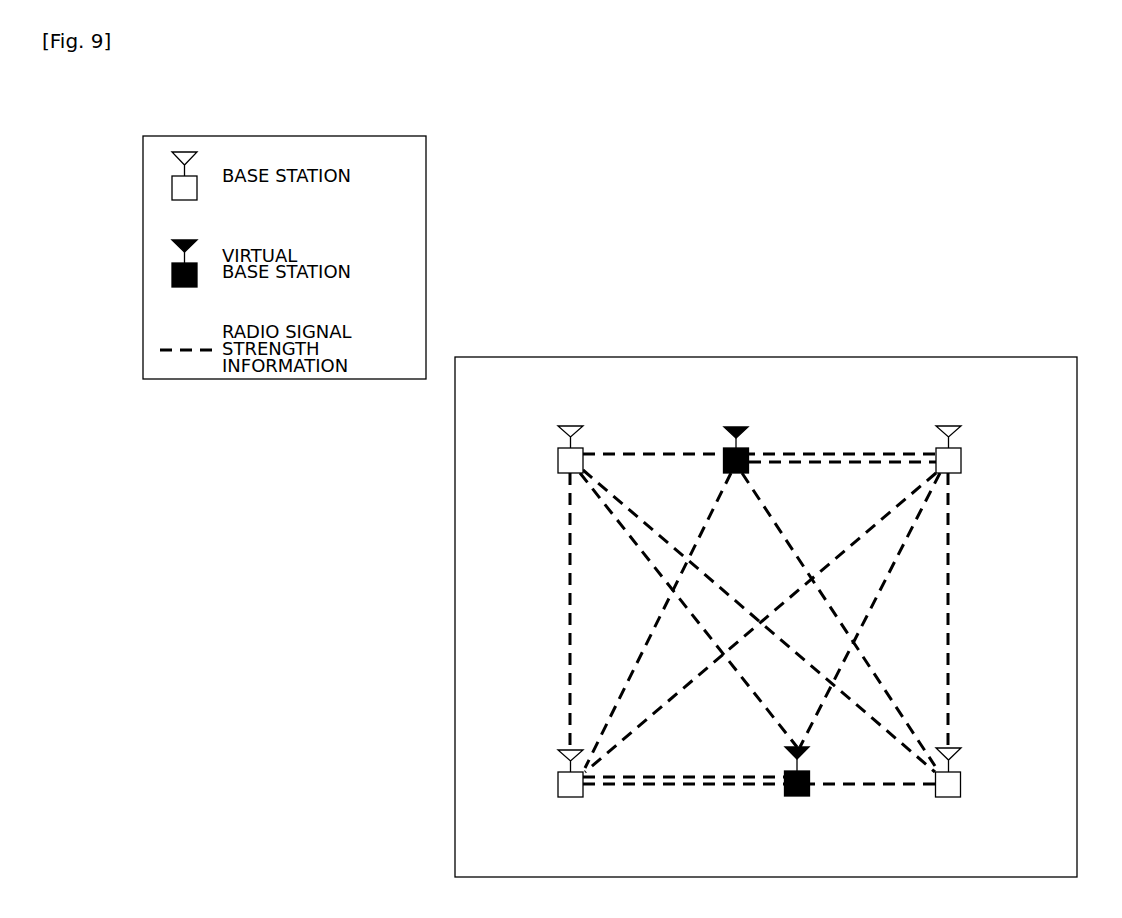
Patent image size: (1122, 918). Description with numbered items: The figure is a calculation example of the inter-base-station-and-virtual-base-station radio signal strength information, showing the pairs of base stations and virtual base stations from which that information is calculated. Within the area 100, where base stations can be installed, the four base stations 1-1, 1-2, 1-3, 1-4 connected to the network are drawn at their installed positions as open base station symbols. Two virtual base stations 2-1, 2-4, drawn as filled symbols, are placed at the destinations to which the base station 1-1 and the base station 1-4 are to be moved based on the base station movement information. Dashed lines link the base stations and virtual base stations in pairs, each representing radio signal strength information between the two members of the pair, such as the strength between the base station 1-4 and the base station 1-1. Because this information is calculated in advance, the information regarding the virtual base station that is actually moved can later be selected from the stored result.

The area 100 is at (1017, 357).
The base station 1-1 is at (566, 474).
The base station 1-2 is at (957, 474).
The base station 1-3 is at (563, 798).
The base station 1-4 is at (940, 798).
The virtual base station 2-1 is at (735, 427).
The virtual base station 2-4 is at (797, 797).